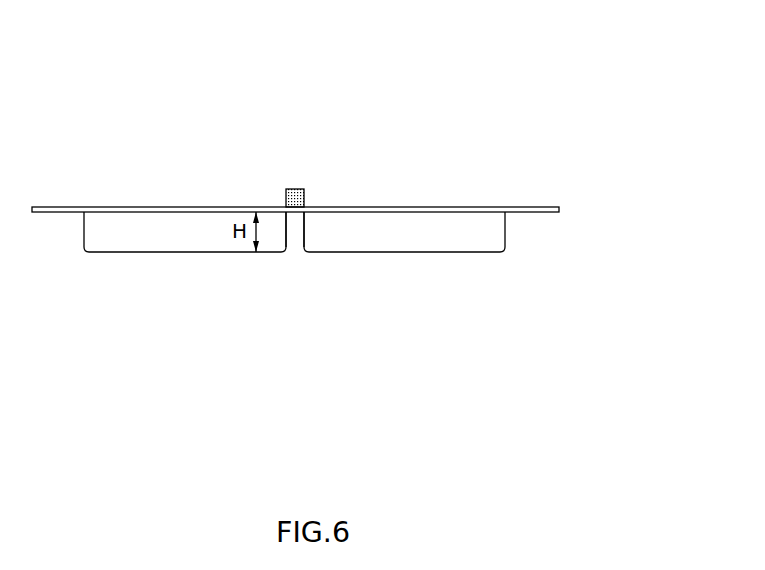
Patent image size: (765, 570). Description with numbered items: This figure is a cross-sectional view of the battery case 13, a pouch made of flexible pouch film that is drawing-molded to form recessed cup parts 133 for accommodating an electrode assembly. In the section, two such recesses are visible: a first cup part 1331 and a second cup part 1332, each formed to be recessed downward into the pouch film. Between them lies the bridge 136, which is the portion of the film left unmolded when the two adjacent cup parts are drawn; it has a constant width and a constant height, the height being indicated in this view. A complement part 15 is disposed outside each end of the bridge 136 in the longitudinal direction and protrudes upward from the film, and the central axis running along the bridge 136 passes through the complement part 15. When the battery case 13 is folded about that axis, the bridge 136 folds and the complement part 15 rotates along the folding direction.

The battery case 13 is at (430, 84).
The complement part 15 is at (293, 189).
The cup part 133 is at (294, 294).
The first cup part 1331 is at (183, 242).
The second cup part 1332 is at (404, 265).
The bridge 136 is at (295, 212).